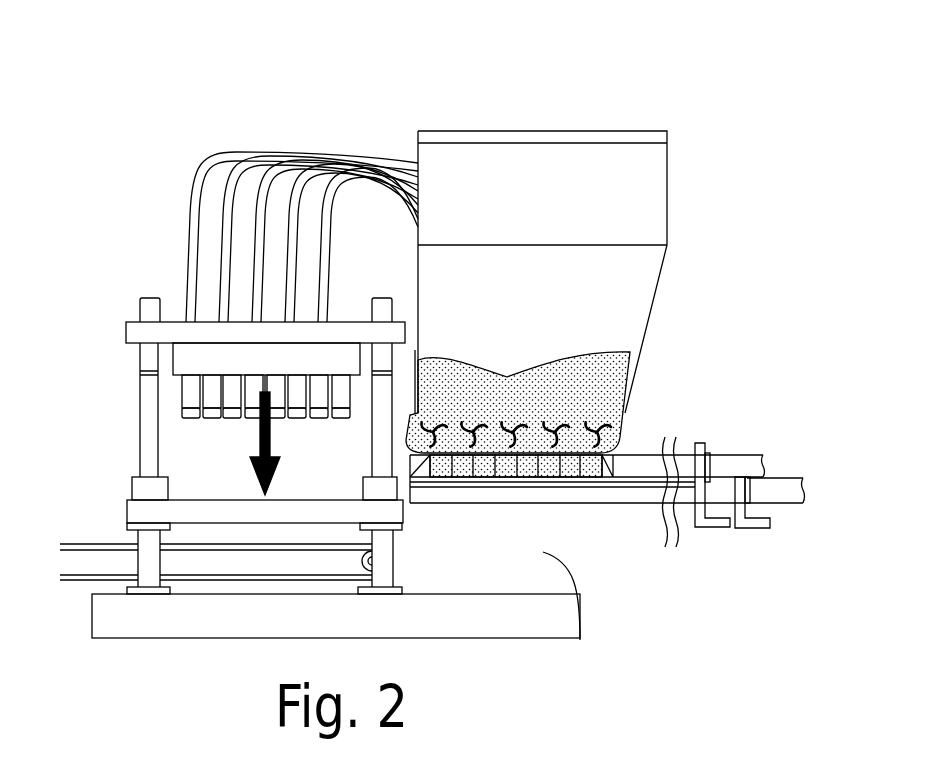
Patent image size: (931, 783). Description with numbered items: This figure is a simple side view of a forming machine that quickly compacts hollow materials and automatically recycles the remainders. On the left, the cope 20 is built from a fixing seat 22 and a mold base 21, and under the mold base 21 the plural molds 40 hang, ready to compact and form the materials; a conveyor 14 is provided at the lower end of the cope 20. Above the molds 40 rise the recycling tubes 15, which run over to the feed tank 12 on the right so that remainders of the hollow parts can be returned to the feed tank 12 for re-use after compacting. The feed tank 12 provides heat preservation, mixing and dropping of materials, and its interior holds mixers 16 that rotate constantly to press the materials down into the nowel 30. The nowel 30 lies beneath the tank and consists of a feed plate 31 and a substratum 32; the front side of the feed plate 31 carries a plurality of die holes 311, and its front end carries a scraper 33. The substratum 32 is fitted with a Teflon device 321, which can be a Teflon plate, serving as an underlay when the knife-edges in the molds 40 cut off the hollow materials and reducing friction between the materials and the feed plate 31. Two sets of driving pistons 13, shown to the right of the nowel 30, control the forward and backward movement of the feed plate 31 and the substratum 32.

The feed tank 12 is at (443, 160).
The driving pistons 13 is at (738, 462).
The conveyor 14 is at (120, 543).
The recycling tubes 15 is at (202, 167).
The mixers 16 is at (527, 420).
The cope 20 is at (130, 308).
The mold base 21 is at (152, 373).
The fixing seat 22 is at (148, 335).
The nowel 30 is at (668, 409).
The feed plate 31 is at (653, 463).
The die holes 311 is at (510, 473).
The substratum 32 is at (615, 497).
The Teflon device 321 is at (595, 484).
The scraper 33 is at (405, 457).
The molds 40 is at (342, 413).